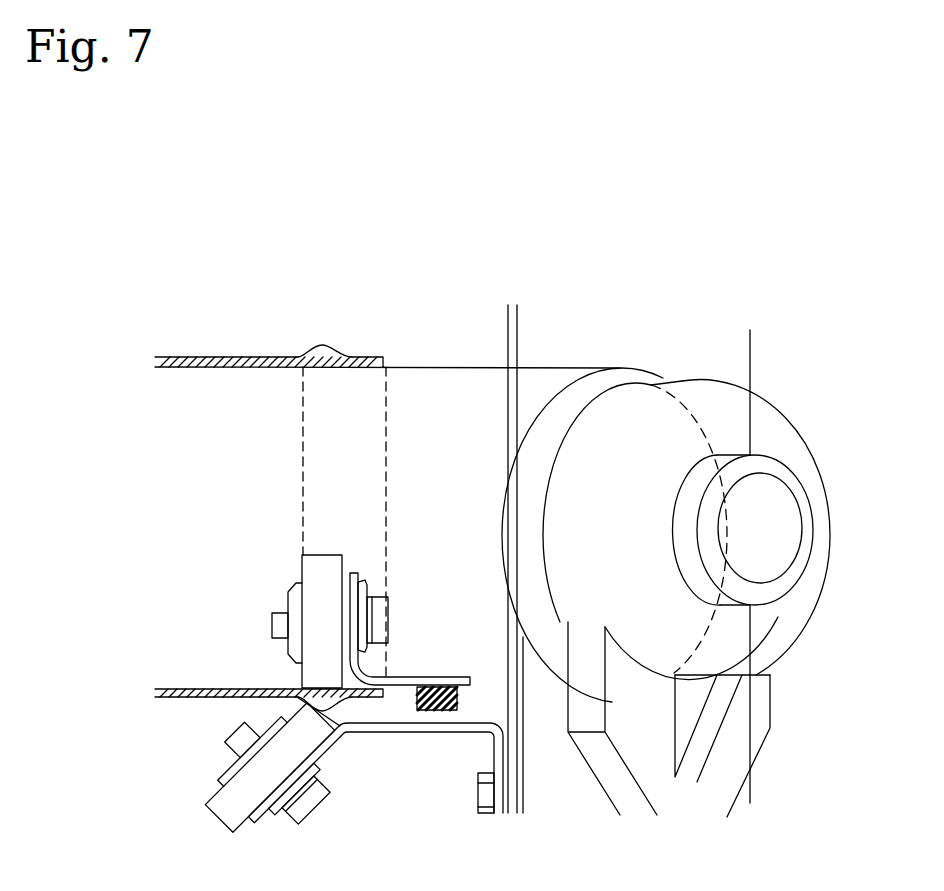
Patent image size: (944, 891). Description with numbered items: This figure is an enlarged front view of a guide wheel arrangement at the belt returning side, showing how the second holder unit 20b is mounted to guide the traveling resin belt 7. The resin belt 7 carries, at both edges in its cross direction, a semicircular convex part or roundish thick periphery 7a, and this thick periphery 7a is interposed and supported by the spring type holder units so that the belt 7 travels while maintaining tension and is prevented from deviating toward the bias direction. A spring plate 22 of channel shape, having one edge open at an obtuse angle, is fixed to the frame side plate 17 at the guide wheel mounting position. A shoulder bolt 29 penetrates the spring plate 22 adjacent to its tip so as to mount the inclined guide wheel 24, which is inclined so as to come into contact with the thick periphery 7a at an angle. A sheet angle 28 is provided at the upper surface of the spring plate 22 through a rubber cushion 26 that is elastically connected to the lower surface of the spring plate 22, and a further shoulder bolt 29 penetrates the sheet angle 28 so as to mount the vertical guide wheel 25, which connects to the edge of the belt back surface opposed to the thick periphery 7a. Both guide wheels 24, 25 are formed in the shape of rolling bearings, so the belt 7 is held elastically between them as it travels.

The resin belt 7 is at (189, 688).
The roundish thick periphery 7a is at (332, 345).
The frame side plate 17 is at (521, 783).
The second holder unit 20b is at (266, 512).
The spring plate 22 is at (404, 733).
The inclined guide wheel 24 is at (212, 812).
The vertical guide wheel 25 is at (315, 569).
The rubber cushion 26 is at (437, 692).
The sheet angle 28 is at (390, 674).
The shoulder bolt 29 is at (381, 618).